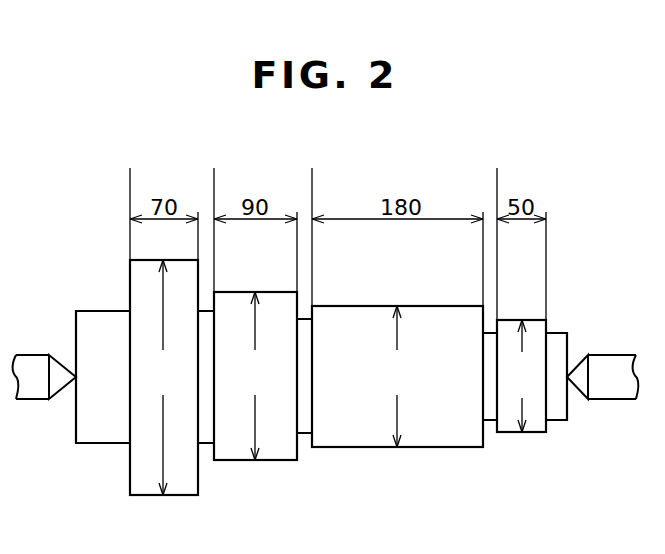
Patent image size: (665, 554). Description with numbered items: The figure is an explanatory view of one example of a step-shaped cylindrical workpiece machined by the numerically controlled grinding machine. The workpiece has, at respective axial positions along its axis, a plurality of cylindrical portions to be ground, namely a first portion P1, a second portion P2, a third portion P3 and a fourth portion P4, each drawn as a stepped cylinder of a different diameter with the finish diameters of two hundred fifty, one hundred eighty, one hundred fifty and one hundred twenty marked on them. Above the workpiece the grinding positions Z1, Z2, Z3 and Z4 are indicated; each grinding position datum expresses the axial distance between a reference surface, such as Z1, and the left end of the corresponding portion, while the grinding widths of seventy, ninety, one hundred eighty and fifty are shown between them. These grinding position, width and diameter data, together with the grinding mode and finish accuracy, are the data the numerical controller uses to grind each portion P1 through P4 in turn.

The first cylindrical portion to be ground P1 is at (176, 496).
The second cylindrical portion to be ground P2 is at (272, 461).
The third cylindrical portion to be ground P3 is at (385, 448).
The fourth cylindrical portion to be ground P4 is at (511, 433).
The grinding position of the first portion Z1 is at (131, 201).
The grinding position of the second portion Z2 is at (218, 217).
The grinding position of the third portion Z3 is at (313, 224).
The grinding position of the fourth portion Z4 is at (496, 231).